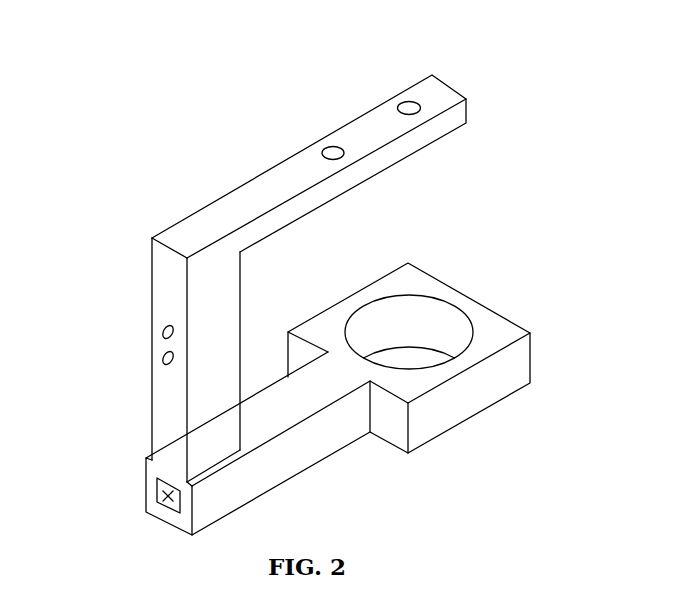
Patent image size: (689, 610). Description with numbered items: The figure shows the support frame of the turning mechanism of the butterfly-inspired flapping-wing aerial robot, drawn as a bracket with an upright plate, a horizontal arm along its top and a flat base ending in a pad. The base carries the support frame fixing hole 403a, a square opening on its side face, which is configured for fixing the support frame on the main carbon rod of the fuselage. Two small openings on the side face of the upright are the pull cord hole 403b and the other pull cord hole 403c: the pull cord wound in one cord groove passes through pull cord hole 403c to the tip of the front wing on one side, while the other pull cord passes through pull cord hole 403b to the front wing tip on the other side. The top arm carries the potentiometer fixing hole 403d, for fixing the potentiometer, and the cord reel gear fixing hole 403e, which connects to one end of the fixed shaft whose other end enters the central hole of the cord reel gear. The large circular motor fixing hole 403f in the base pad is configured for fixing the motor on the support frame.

The support frame fixing hole 403a is at (166, 496).
The pull cord hole 403b is at (164, 361).
The pull cord hole 403c is at (164, 330).
The potentiometer fixing hole 403d is at (326, 150).
The cord reel gear fixing hole 403e is at (406, 104).
The motor fixing hole 403f is at (405, 318).